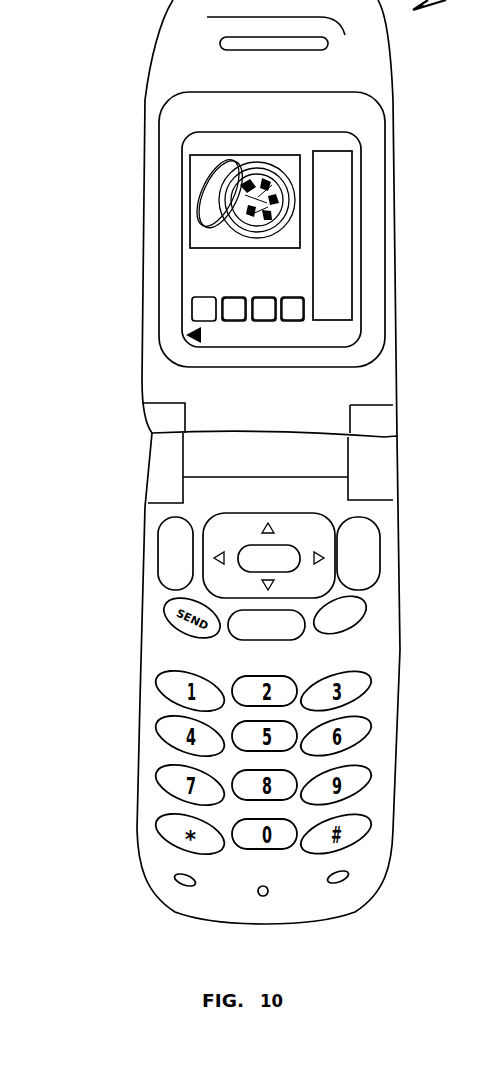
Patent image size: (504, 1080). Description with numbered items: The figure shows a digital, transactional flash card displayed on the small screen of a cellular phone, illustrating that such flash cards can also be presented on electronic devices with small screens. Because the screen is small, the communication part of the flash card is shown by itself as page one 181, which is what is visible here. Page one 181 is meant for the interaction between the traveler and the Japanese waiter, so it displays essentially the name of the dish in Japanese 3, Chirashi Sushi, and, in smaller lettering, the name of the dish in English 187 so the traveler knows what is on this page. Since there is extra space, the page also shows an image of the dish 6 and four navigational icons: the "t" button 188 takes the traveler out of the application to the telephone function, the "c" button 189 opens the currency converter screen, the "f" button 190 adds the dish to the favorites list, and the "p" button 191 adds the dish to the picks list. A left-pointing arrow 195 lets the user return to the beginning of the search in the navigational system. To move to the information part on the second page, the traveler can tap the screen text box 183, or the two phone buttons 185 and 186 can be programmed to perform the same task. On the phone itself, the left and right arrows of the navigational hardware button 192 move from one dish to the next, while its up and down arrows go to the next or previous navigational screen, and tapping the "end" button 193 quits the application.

The image of the dish 6 is at (222, 178).
The name of the dish in English 187 is at (190, 260).
The navigational button "t" 188 is at (193, 310).
The arrow pointing left 195 is at (188, 338).
The page one 181 is at (340, 140).
The name of the dish in Japanese 3 is at (352, 202).
The screen text box 183 is at (350, 333).
The "c" button 189 is at (228, 321).
The "f" button 190 is at (268, 321).
The "p" button 191 is at (296, 321).
The navigational hardware button 192 is at (230, 522).
The button 185 is at (178, 580).
The button 186 is at (367, 557).
The "end" button 193 is at (362, 620).